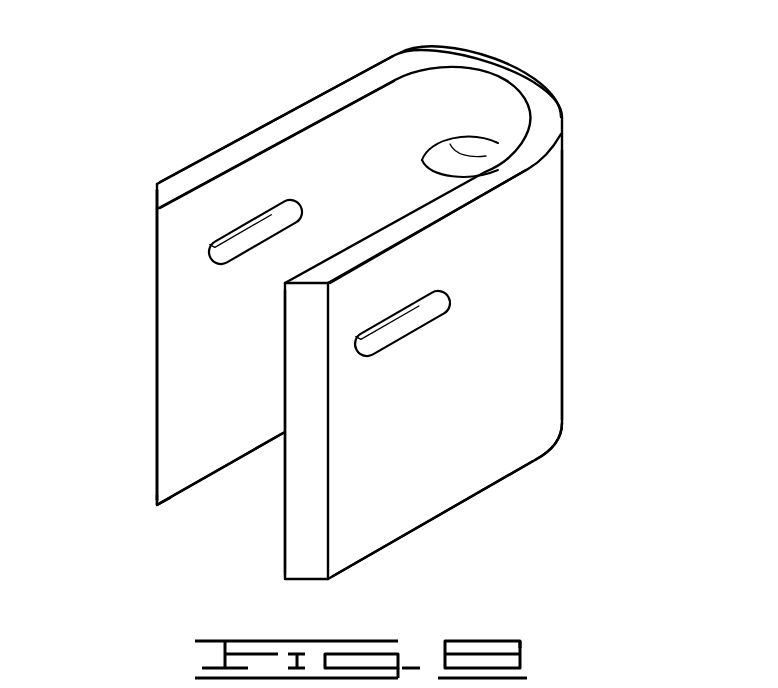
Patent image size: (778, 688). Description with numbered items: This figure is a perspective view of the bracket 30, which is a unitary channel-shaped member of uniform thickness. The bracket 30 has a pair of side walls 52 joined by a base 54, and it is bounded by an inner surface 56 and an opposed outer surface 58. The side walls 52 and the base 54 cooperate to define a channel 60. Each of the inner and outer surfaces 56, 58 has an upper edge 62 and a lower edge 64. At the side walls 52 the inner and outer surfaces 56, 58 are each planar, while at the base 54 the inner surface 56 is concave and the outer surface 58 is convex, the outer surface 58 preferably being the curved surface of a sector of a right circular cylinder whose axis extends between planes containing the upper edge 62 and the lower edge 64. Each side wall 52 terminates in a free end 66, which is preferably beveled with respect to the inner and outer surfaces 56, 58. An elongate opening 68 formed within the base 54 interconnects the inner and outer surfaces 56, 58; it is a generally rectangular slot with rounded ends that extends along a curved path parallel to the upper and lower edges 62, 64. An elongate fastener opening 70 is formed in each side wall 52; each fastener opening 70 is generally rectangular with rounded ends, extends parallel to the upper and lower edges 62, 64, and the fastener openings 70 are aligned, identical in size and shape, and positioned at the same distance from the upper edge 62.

The bracket 30 is at (253, 137).
The side wall 52 is at (183, 478).
The base 54 is at (440, 90).
The inner surface 56 is at (372, 183).
The outer surface 58 is at (474, 388).
The channel 60 is at (222, 346).
The upper edge 62 is at (196, 160).
The lower edge 64 is at (230, 465).
The free end 66 is at (157, 466).
The elongate opening 68 is at (468, 163).
The fastener opening 70 is at (216, 257).